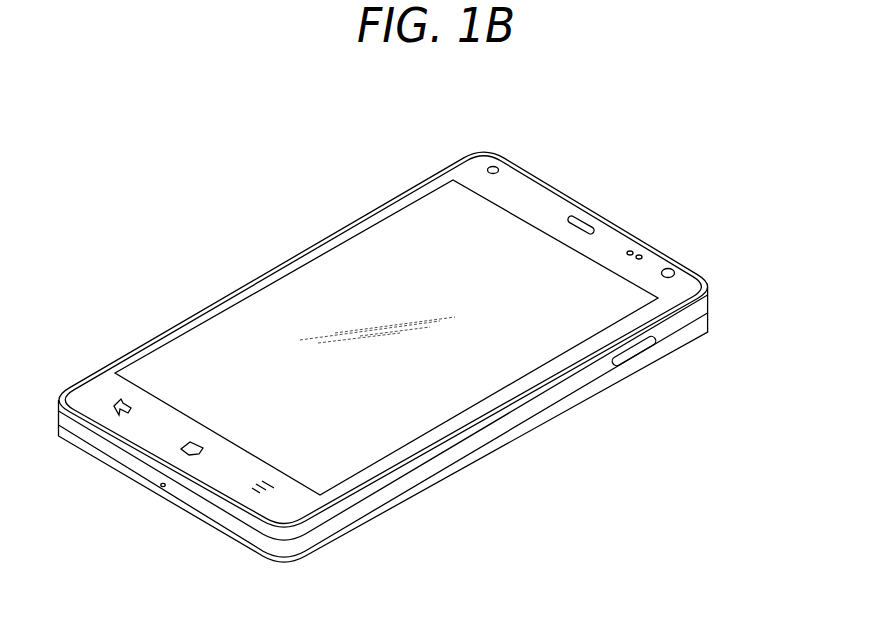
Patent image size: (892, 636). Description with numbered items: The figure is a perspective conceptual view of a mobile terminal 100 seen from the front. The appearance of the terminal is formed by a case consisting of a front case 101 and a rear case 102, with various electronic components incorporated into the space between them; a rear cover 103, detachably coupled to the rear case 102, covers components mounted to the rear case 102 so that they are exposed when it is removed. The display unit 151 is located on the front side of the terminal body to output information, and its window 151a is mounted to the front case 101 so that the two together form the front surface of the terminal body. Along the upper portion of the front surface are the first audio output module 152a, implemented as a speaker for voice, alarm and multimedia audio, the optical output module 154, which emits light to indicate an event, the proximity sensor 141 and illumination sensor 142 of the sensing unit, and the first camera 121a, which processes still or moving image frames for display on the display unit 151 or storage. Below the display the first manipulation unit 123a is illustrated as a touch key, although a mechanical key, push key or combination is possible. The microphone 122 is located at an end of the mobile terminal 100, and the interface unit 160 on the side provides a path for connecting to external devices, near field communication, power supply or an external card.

The mobile terminal 100 is at (272, 207).
The front case 101 is at (704, 295).
The rear case 102 is at (705, 312).
The rear cover 103 is at (704, 330).
The first camera 121a is at (673, 270).
The microphone 122 is at (161, 488).
The first manipulation unit 123a is at (252, 488).
The proximity sensor 141 is at (641, 256).
The illumination sensor 142 is at (632, 250).
The display unit 151 is at (258, 330).
The window 151a is at (415, 240).
The first audio output module 152a is at (578, 218).
The optical output module 154 is at (500, 168).
The interface unit 160 is at (640, 360).